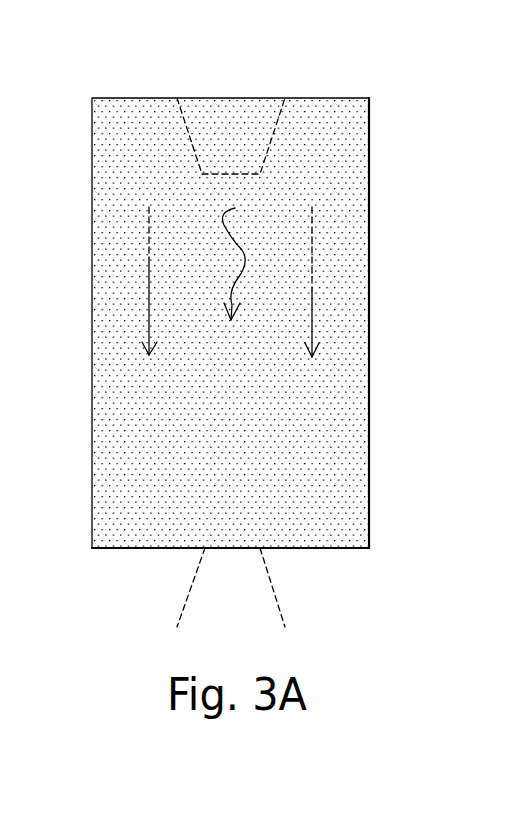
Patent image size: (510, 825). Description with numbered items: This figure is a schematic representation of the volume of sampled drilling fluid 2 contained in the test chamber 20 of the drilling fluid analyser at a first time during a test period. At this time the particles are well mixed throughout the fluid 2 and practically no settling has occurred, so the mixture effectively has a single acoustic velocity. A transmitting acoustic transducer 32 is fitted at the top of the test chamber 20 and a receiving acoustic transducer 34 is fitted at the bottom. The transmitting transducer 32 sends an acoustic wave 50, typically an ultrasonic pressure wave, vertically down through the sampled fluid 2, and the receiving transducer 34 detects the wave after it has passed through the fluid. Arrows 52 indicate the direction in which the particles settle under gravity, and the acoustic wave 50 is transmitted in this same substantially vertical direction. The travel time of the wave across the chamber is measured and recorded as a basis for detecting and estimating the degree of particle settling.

The sampled drilling fluid 2 is at (331, 86).
The test chamber 20 is at (370, 378).
The transmitting acoustic transducer 32 is at (218, 123).
The receiving acoustic transducer 34 is at (260, 592).
The acoustic wave 50 is at (240, 242).
The arrows 52 is at (149, 302).